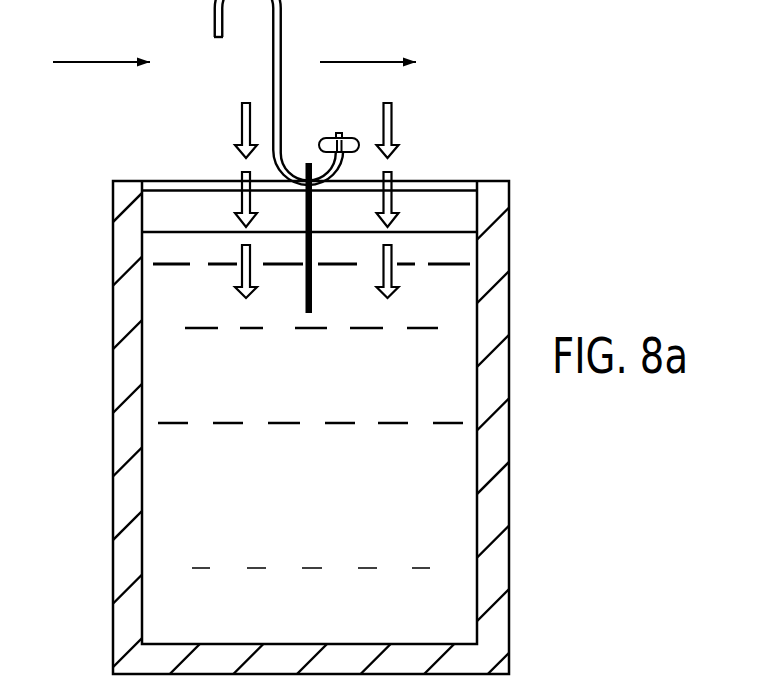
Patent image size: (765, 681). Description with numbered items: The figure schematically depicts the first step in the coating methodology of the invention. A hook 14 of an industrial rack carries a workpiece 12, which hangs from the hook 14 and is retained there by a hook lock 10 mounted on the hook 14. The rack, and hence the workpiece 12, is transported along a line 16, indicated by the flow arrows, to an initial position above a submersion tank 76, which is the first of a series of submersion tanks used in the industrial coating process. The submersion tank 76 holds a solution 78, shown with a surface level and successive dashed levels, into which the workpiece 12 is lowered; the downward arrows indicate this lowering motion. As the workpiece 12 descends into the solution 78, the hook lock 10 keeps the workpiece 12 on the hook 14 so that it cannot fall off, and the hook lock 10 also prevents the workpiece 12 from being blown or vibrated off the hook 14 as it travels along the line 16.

The hook lock 10 is at (327, 140).
The workpiece 12 is at (301, 283).
The hook 14 is at (251, 9).
The line 16 is at (358, 62).
The submersion tank 76 is at (96, 501).
The solution 78 is at (320, 482).